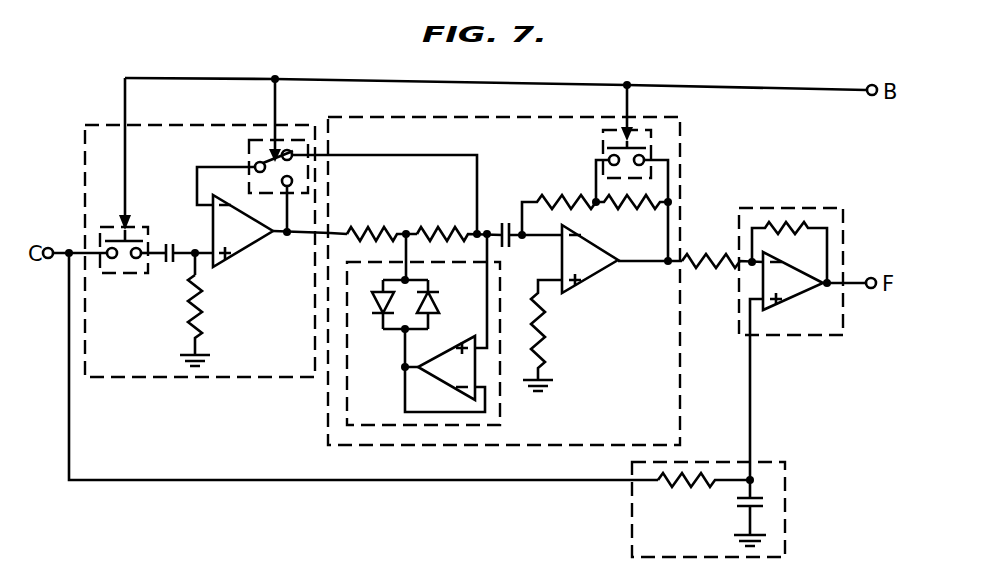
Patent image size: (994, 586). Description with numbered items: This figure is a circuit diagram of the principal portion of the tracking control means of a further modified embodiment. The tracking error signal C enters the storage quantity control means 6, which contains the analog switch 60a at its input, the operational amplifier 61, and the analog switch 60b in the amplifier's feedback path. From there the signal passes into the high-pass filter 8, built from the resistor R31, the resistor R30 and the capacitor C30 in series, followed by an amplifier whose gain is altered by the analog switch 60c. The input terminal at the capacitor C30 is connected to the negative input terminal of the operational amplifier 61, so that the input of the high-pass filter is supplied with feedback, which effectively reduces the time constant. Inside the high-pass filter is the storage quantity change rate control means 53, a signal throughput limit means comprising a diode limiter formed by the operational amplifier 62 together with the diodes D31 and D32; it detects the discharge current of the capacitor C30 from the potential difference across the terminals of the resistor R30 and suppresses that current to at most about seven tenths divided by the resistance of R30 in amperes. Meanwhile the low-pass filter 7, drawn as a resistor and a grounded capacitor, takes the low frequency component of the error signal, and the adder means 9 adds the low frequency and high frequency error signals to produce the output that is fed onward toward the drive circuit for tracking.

The storage quantity control means 6 is at (84, 126).
The analog switch 60a is at (124, 275).
The analog switch 60b is at (248, 143).
The analog switch 60c is at (603, 135).
The operational amplifier 61 is at (237, 258).
The resistor R31 is at (365, 226).
The resistor R30 is at (445, 226).
The capacitor C30 is at (502, 223).
The high-pass filter 8 is at (682, 140).
The storage quantity change rate control means 53 is at (500, 383).
The diode D31 is at (372, 293).
The diode D32 is at (440, 300).
The operational amplifier 62 is at (437, 376).
The adder means 9 is at (824, 207).
The low-pass filter 7 is at (778, 455).